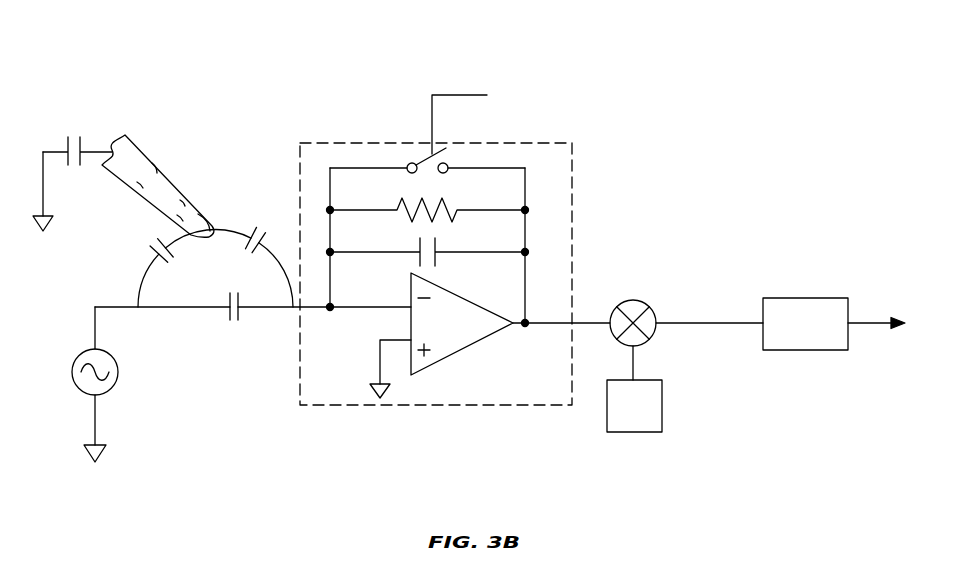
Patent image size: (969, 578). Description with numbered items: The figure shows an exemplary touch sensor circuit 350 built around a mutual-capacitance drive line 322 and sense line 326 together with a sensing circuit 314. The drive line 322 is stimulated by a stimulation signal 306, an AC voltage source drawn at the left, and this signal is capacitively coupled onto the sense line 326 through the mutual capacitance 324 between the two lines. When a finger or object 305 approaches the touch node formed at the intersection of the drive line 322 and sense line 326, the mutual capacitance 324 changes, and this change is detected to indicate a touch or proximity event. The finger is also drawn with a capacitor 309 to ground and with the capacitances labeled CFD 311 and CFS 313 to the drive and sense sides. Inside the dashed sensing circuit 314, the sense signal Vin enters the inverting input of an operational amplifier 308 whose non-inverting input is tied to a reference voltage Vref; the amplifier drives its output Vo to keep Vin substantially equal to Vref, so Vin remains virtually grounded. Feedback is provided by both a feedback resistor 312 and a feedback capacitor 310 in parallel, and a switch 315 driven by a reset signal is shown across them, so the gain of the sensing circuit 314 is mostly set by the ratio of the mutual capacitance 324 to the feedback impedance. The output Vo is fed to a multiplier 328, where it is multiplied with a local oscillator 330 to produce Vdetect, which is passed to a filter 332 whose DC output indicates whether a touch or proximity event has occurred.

The touch sensor circuit 350 is at (161, 82).
The finger-to-ground capacitor 309 is at (75, 136).
The finger or object 305 is at (166, 166).
The finger-to-drive capacitance CFD 311 is at (148, 253).
The finger-to-sense capacitance CFS 313 is at (255, 232).
The drive line 322 is at (116, 306).
The mutual capacitance 324 is at (226, 305).
The sense line 326 is at (268, 310).
The stimulation signal 306 is at (119, 373).
The sensing circuit 314 is at (350, 143).
The reset switch 315 is at (420, 158).
The feedback resistor 312 is at (456, 206).
The feedback capacitor 310 is at (440, 250).
The operational amplifier 308 is at (497, 337).
The multiplier 328 is at (634, 300).
The local oscillator 330 is at (633, 432).
The filter 332 is at (805, 298).